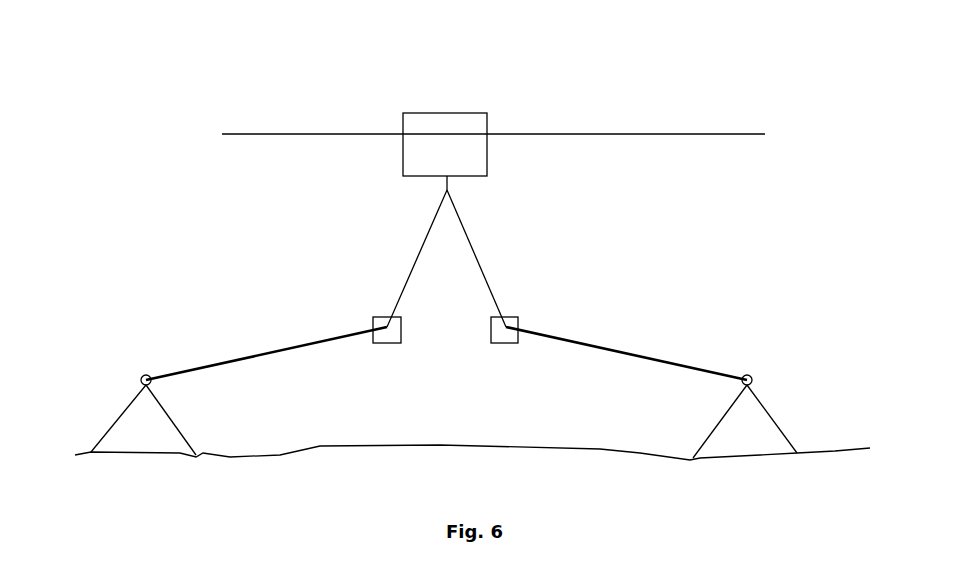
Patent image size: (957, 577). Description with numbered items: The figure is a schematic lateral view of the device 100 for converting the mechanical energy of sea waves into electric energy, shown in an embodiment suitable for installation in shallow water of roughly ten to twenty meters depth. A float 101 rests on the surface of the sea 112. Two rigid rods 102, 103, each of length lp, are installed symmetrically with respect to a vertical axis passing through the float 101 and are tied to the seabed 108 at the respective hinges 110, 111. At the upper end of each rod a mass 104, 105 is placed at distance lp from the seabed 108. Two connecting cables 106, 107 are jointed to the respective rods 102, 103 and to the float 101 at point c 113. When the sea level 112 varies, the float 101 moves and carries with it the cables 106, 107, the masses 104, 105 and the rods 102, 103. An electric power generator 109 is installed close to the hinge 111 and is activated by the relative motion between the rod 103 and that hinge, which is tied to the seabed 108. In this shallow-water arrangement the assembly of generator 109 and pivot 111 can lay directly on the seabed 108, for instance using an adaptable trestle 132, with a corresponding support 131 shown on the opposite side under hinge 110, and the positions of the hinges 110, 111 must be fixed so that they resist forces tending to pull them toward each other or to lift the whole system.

The device 100 is at (200, 236).
The float 101 is at (475, 112).
The rigid rod 102 is at (218, 365).
The rigid rod 103 is at (682, 365).
The mass M 104 is at (386, 325).
The mass M 105 is at (516, 322).
The connecting cable 106 is at (418, 258).
The connecting cable 107 is at (477, 258).
The seabed 108 is at (110, 450).
The electric power generator 109 is at (756, 388).
The hinge 110 is at (143, 375).
The hinge a 111 is at (752, 376).
The sea surface 112 is at (652, 133).
The point c 113 is at (447, 190).
The left support leg 131 is at (126, 413).
The adaptable trestle 132 is at (790, 442).